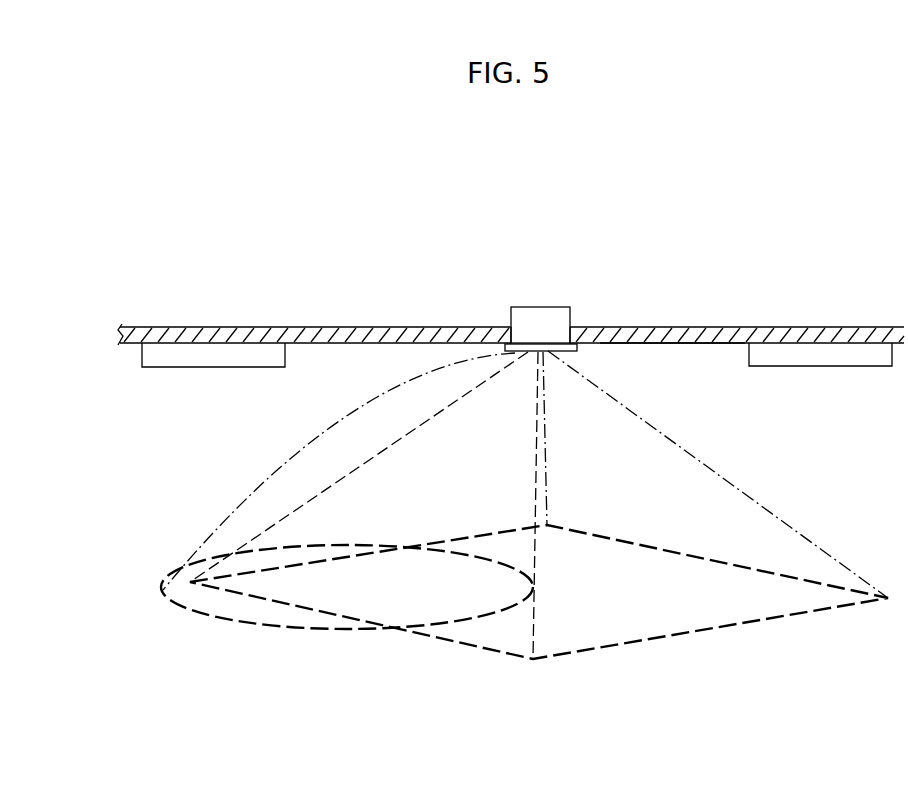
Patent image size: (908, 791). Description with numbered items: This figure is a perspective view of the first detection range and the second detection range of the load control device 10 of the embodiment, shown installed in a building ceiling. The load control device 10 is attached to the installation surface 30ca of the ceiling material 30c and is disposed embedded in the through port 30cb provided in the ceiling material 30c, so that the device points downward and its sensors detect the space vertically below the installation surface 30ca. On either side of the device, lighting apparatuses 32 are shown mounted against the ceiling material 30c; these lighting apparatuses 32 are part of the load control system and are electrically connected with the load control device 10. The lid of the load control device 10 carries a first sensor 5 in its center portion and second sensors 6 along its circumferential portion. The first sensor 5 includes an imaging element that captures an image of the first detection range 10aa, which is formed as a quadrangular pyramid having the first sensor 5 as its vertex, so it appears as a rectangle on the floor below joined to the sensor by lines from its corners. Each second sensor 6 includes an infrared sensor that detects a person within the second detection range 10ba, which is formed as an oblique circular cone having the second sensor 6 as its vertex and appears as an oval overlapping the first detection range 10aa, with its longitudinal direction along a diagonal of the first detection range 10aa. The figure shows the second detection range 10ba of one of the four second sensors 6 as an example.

The load control device 10 is at (515, 307).
The ceiling material 30c is at (698, 335).
The through port 30cb is at (566, 327).
The installation surface 30ca is at (675, 344).
The lighting apparatus 32 is at (198, 359).
The first sensor 5 is at (545, 355).
The second sensor 6 is at (522, 355).
The first detection range 10aa is at (673, 637).
The second detection range 10ba is at (257, 627).